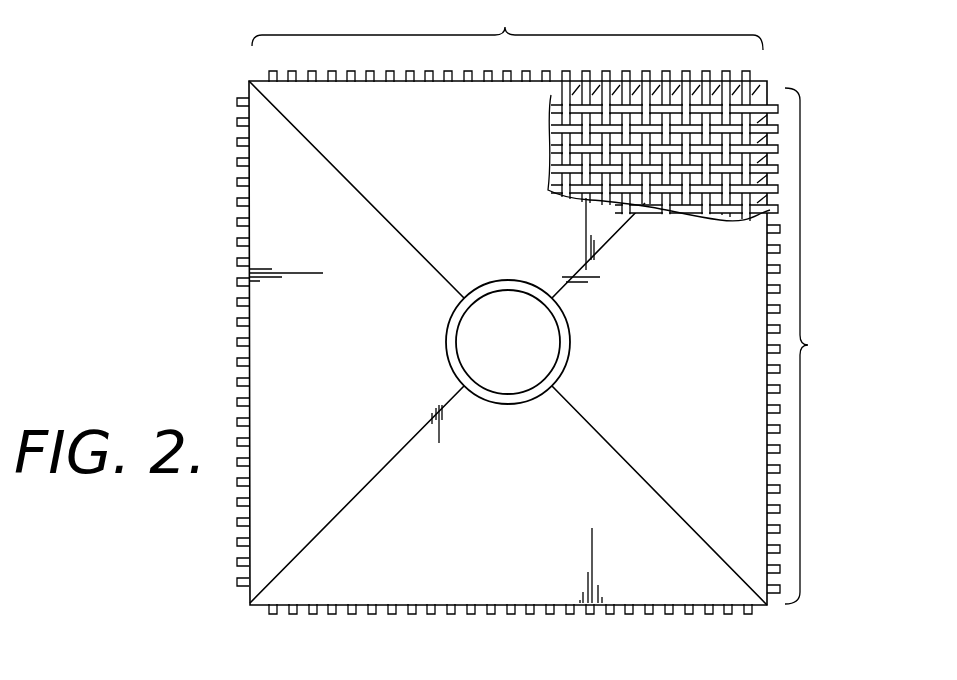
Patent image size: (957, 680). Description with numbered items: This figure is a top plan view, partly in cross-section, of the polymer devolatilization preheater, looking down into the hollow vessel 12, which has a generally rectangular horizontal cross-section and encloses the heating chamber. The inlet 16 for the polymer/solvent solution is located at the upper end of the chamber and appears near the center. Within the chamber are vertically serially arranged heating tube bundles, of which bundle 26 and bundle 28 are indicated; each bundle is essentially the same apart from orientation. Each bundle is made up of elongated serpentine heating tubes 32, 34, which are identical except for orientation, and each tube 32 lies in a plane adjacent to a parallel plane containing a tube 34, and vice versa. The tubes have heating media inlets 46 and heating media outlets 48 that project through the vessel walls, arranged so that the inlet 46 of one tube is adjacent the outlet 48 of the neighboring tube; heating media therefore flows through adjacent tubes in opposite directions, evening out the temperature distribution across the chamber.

The hollow vessel 12 is at (316, 0).
The inlet 16 is at (563, 352).
The heating tube bundle 26 is at (821, 346).
The heating tube bundle 28 is at (507, 25).
The serpentine heating tube 32 is at (770, 98).
The serpentine heating tube 34 is at (244, 118).
The heating media inlet 46 is at (244, 162).
The heating media outlet 48 is at (242, 97).